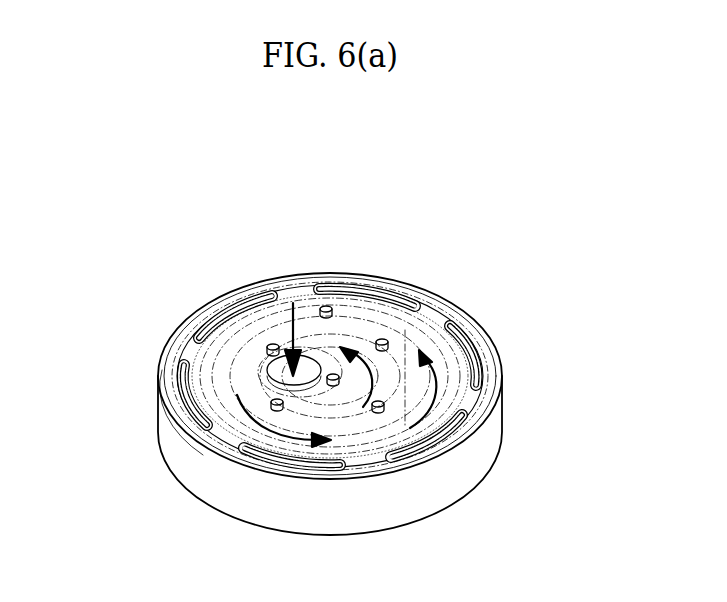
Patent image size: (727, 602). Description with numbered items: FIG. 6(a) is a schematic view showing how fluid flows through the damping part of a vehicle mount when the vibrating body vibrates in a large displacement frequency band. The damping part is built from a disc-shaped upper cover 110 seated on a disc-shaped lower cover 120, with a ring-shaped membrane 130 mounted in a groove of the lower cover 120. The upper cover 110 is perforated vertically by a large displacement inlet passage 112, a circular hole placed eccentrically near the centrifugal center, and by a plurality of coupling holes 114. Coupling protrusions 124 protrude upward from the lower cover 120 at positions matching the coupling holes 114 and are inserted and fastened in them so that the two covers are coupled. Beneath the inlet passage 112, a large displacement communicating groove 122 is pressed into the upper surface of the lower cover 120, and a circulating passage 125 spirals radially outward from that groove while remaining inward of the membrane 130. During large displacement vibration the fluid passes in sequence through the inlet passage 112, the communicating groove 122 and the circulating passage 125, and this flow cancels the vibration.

The upper cover 110 is at (470, 321).
The large displacement inlet passage 112 is at (270, 362).
The coupling hole 114 is at (335, 385).
The lower cover 120 is at (494, 440).
The large displacement communicating groove 122 is at (273, 373).
The coupling protrusion 124 is at (381, 340).
The circulating passage 125 is at (228, 409).
The membrane 130 is at (470, 372).